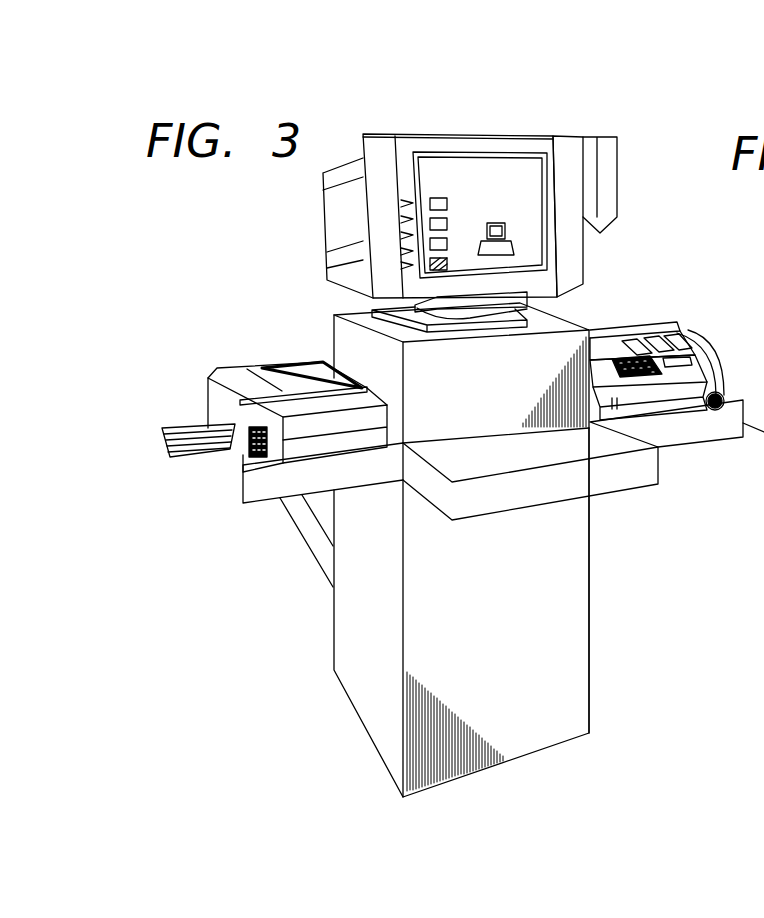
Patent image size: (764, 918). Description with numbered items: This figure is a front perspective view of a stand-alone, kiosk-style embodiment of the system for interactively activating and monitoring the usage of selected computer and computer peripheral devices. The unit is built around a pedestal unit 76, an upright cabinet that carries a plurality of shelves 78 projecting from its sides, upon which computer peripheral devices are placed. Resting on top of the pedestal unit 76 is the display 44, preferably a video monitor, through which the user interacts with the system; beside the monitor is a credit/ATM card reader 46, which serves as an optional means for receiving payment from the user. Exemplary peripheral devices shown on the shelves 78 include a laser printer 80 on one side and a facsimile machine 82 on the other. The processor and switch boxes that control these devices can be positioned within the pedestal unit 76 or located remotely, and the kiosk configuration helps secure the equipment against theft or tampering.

The display 44 is at (427, 111).
The credit/ATM card reader 46 is at (607, 148).
The pedestal unit 76 is at (615, 542).
The shelves 78 is at (231, 474).
The laser printer 80 is at (237, 367).
The facsimile machine 82 is at (668, 328).